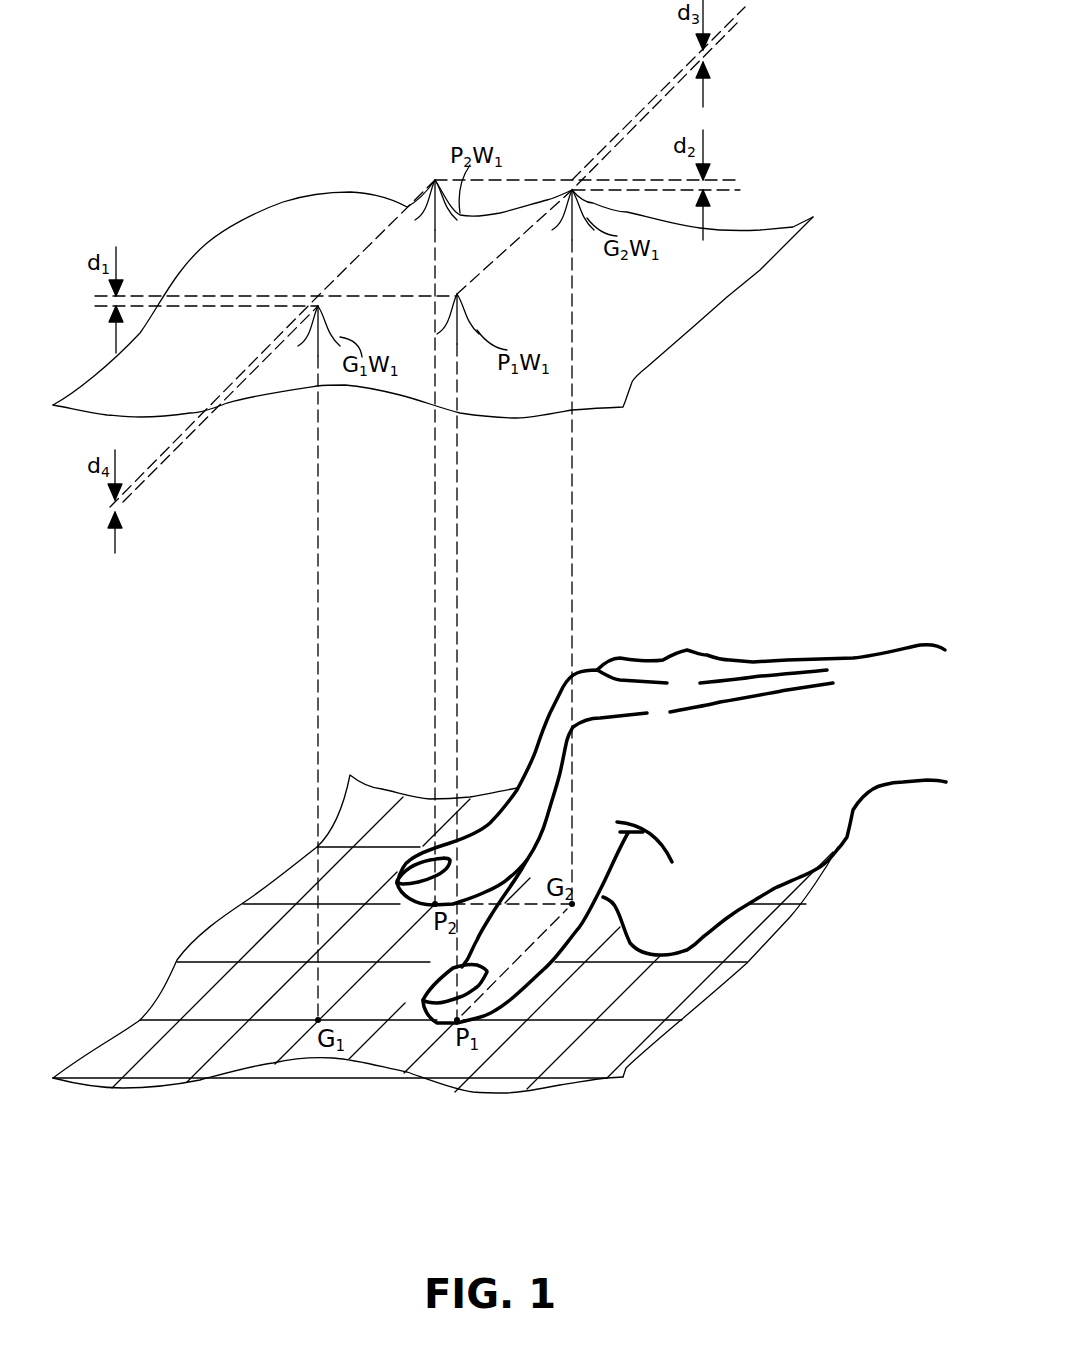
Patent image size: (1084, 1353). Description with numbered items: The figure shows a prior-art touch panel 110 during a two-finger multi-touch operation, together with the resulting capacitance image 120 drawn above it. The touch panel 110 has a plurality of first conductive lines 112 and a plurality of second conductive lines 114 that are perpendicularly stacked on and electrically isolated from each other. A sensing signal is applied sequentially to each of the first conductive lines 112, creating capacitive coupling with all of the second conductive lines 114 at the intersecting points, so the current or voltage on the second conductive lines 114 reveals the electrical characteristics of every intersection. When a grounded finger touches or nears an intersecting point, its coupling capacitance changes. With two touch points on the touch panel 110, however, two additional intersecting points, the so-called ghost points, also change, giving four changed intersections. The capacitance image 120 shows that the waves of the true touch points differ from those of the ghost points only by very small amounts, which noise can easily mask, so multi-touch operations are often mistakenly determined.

The touch panel 110 is at (760, 940).
The first conductive lines 112 is at (140, 1020).
The second conductive lines 114 is at (137, 1063).
The capacitance image 120 is at (758, 267).